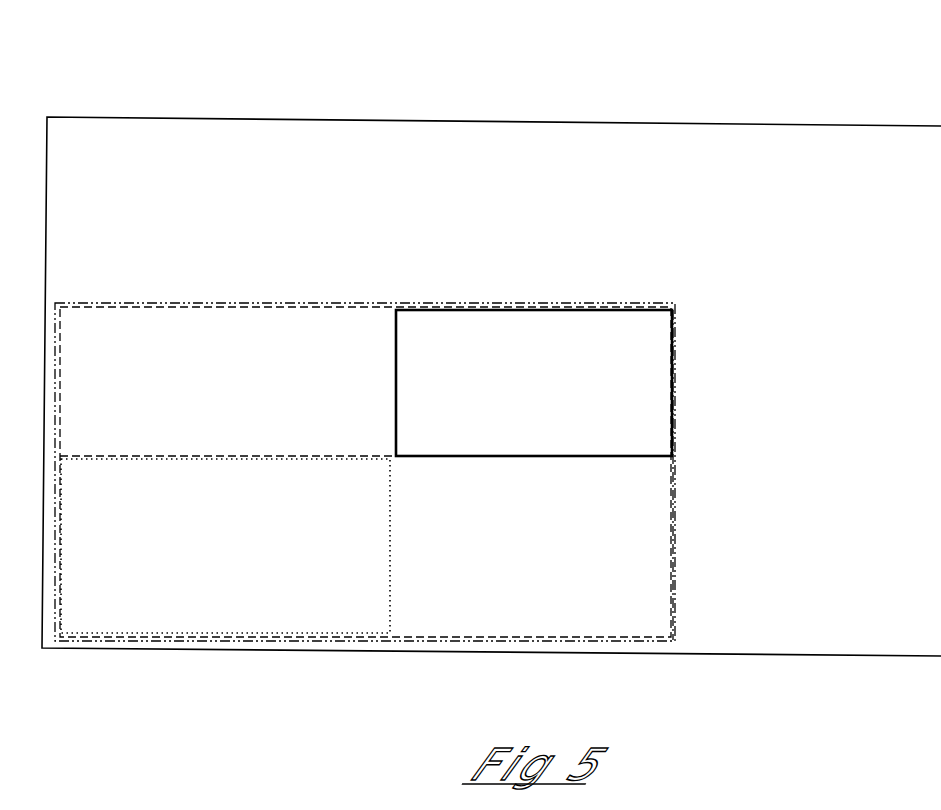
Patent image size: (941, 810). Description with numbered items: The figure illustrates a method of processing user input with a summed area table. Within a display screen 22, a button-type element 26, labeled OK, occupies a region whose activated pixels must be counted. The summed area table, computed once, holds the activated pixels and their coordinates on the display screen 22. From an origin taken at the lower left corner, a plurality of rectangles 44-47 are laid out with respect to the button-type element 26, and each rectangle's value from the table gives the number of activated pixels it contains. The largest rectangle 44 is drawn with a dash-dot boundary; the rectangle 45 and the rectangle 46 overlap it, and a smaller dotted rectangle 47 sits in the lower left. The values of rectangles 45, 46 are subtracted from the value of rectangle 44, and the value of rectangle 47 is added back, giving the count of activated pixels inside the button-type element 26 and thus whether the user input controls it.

The display screen 22 is at (224, 118).
The button-type element 26 is at (545, 308).
The rectangle 44 is at (368, 305).
The rectangle 45 is at (207, 305).
The rectangle 46 is at (673, 553).
The rectangle 47 is at (313, 637).